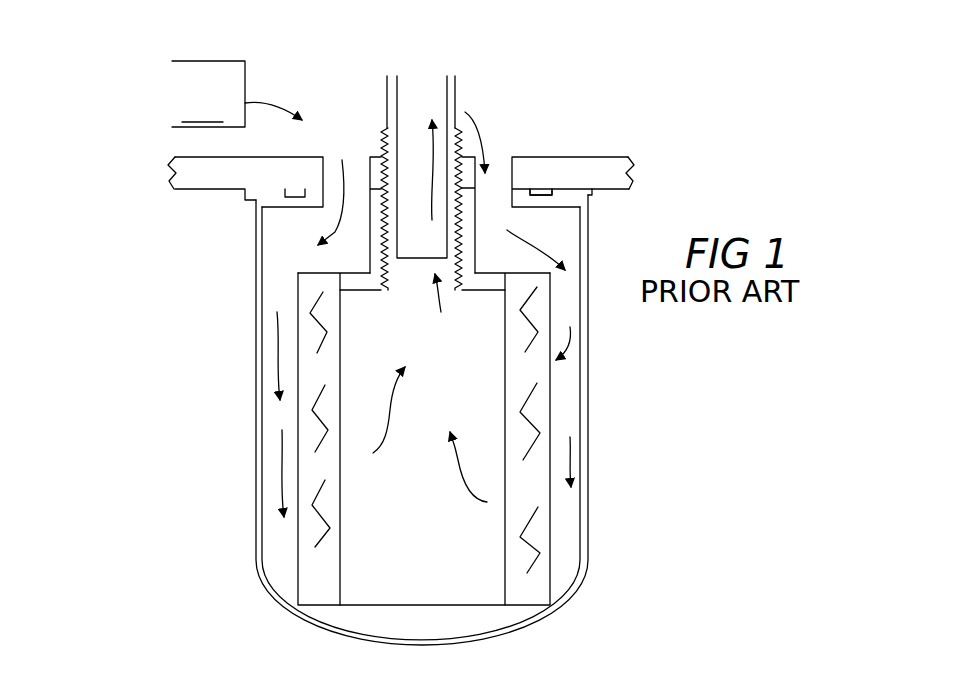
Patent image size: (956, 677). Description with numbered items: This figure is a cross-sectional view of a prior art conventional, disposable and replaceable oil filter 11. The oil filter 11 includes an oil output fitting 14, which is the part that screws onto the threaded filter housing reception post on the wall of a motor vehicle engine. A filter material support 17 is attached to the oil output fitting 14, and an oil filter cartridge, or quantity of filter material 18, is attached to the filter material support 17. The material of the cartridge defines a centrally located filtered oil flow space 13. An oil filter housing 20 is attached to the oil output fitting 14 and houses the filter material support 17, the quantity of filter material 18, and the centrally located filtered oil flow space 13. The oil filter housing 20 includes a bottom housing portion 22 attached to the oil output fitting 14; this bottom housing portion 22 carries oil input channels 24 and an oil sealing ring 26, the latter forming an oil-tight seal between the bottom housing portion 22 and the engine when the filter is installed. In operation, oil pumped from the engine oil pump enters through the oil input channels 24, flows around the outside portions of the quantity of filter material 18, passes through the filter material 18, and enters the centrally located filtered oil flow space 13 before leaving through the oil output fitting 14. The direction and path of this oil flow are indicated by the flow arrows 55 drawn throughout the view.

The oil filter 11 is at (207, 390).
The centrally located filtered oil flow space 13 is at (412, 565).
The oil output fitting 14 is at (460, 233).
The filter material support 17 is at (358, 278).
The quantity of filter material 18 is at (313, 553).
The oil filter housing 20 is at (587, 473).
The bottom housing portion 22 is at (566, 200).
The oil input channels 24 is at (368, 200).
The oil sealing ring 26 is at (538, 190).
The flow arrows 55 is at (358, 98).